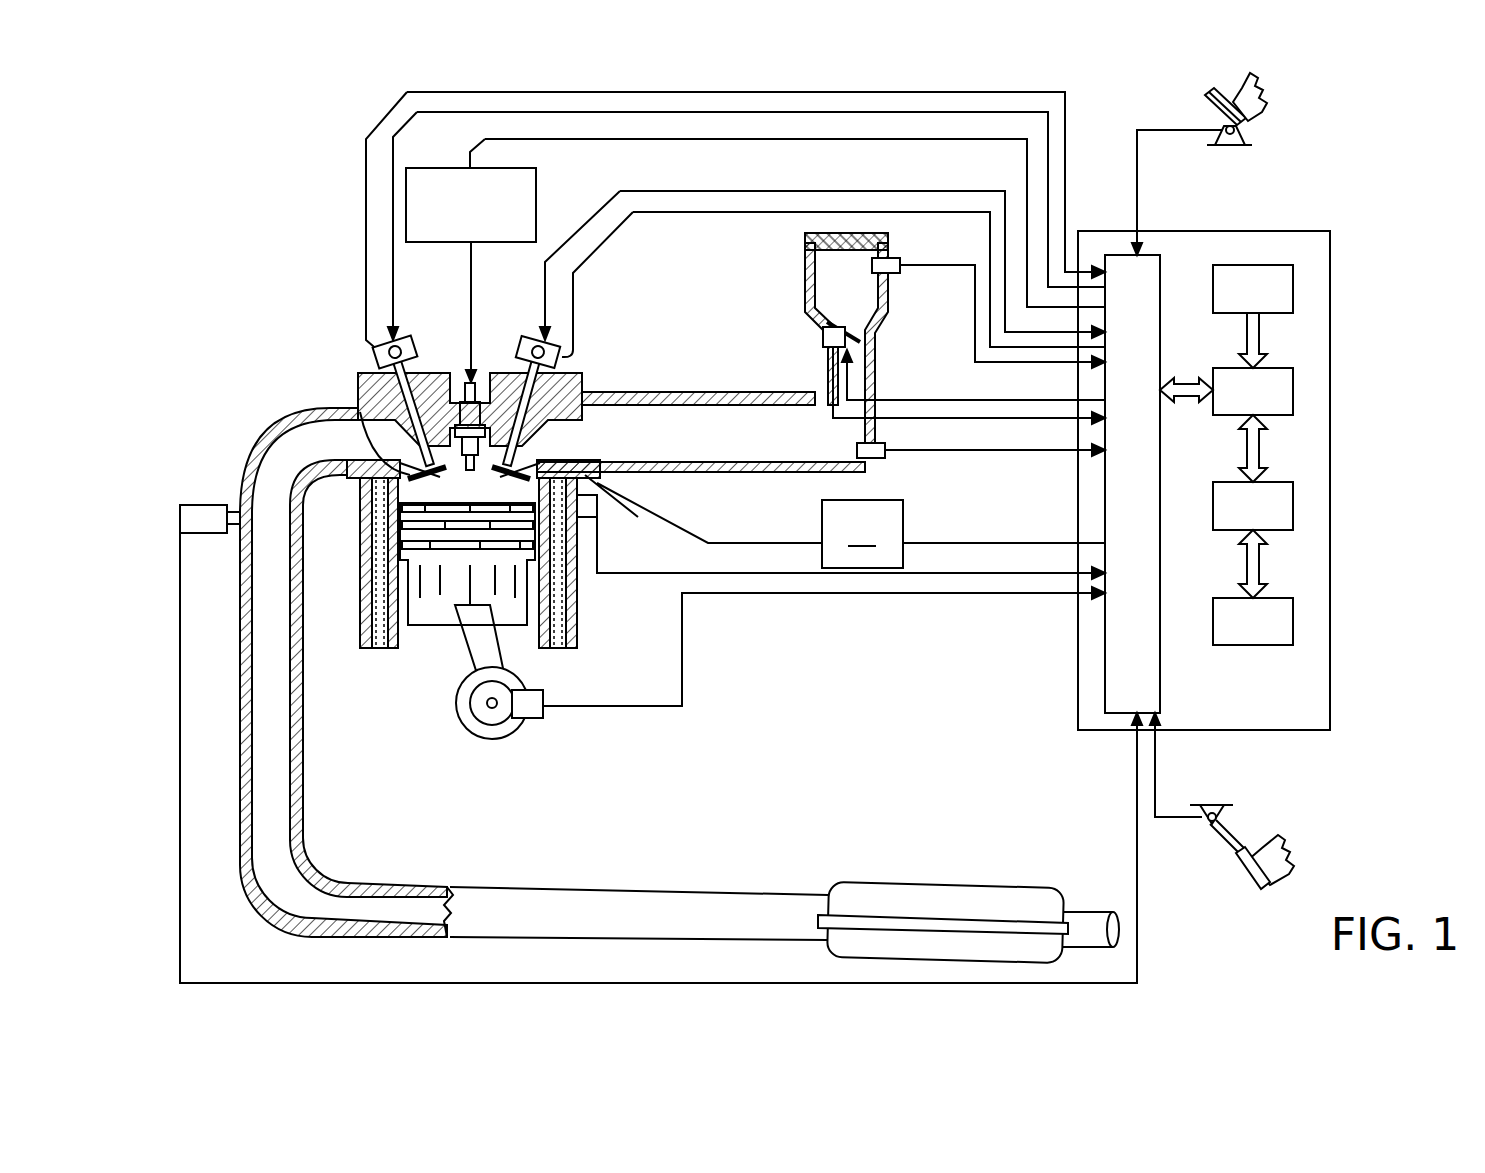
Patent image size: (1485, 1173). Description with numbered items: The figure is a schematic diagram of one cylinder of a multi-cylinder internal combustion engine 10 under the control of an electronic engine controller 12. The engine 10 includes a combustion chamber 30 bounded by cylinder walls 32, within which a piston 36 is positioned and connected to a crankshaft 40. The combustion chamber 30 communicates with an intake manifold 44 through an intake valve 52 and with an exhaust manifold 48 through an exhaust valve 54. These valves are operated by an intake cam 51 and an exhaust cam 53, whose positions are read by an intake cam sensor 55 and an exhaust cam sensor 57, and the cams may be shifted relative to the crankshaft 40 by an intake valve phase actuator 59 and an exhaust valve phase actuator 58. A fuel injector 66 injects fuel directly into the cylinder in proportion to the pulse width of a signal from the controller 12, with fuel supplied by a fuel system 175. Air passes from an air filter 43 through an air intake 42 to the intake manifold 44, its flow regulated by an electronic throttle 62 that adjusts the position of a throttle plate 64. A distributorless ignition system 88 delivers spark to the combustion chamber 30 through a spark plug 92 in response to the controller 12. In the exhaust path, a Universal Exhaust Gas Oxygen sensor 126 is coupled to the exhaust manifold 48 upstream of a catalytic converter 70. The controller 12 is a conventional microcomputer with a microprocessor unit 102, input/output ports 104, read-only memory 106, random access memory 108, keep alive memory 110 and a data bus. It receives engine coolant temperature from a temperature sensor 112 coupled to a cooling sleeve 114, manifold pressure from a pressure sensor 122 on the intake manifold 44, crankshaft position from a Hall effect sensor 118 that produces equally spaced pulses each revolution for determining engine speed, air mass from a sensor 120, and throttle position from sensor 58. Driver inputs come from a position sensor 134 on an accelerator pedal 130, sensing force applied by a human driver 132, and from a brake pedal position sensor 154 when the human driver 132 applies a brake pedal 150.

The internal combustion engine 10 is at (282, 320).
The electronic engine controller 12 is at (1318, 231).
The combustion chamber 30 is at (383, 575).
The cylinder walls 32 is at (406, 640).
The piston 36 is at (450, 593).
The crankshaft 40 is at (480, 726).
The air intake 42 is at (828, 294).
The air filter 43 is at (805, 238).
The intake manifold 44 is at (652, 444).
The exhaust manifold 48 is at (311, 454).
The intake cam 51 is at (535, 338).
The intake valve 52 is at (545, 447).
The exhaust cam 53 is at (398, 335).
The exhaust valve 54 is at (363, 412).
The intake cam sensor 55 is at (552, 358).
The exhaust cam sensor 57 is at (378, 350).
The exhaust valve phase actuator 58 is at (412, 358).
The intake valve phase actuator 59 is at (536, 364).
The electronic throttle 62 is at (862, 333).
The throttle plate 64 is at (822, 336).
The fuel injector 66 is at (703, 509).
The catalytic converter 70 is at (872, 884).
The distributorless ignition system 88 is at (420, 168).
The spark plug 92 is at (478, 382).
The microprocessor unit 102 is at (1293, 388).
The input/output ports 104 is at (1165, 262).
The read-only memory 106 is at (1293, 283).
The random access memory 108 is at (1293, 500).
The keep alive memory 110 is at (1293, 615).
The temperature sensor 112 is at (598, 519).
The cooling sleeve 114 is at (577, 590).
The Hall effect sensor 118 is at (543, 690).
The air mass sensor 120 is at (898, 260).
The pressure sensor 122 is at (885, 459).
The Universal Exhaust Gas Oxygen sensor 126 is at (180, 512).
The accelerator pedal 130 is at (1210, 108).
The human driver 132 is at (1262, 93).
The position sensor 134 is at (1250, 134).
The brake pedal 150 is at (1240, 866).
The brake pedal position sensor 154 is at (1198, 805).
The fuel system 175 is at (963, 534).